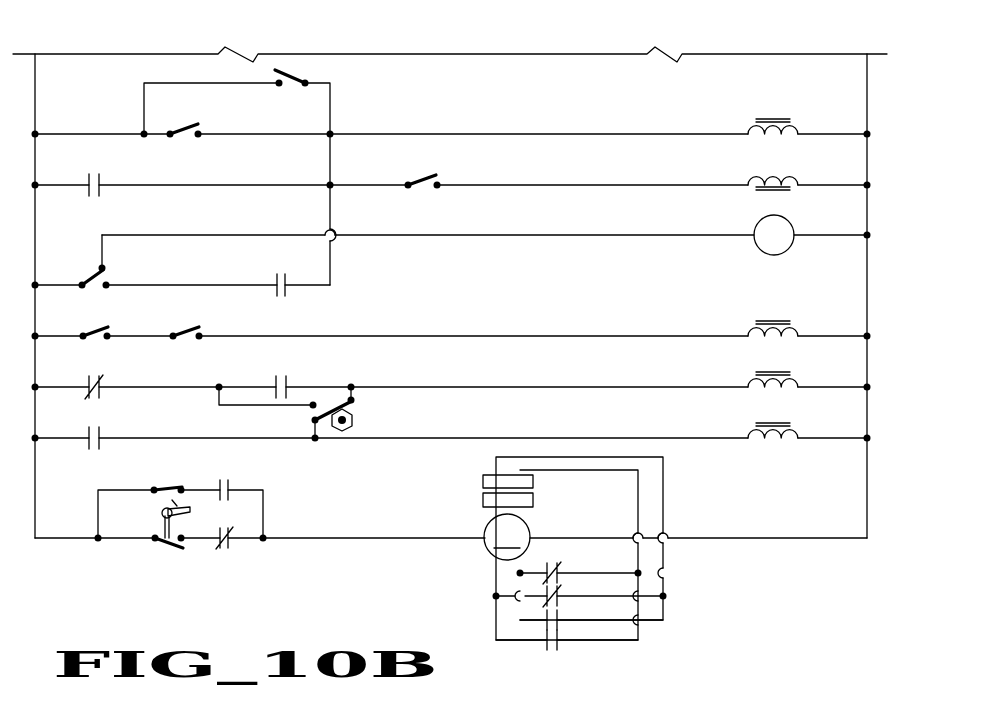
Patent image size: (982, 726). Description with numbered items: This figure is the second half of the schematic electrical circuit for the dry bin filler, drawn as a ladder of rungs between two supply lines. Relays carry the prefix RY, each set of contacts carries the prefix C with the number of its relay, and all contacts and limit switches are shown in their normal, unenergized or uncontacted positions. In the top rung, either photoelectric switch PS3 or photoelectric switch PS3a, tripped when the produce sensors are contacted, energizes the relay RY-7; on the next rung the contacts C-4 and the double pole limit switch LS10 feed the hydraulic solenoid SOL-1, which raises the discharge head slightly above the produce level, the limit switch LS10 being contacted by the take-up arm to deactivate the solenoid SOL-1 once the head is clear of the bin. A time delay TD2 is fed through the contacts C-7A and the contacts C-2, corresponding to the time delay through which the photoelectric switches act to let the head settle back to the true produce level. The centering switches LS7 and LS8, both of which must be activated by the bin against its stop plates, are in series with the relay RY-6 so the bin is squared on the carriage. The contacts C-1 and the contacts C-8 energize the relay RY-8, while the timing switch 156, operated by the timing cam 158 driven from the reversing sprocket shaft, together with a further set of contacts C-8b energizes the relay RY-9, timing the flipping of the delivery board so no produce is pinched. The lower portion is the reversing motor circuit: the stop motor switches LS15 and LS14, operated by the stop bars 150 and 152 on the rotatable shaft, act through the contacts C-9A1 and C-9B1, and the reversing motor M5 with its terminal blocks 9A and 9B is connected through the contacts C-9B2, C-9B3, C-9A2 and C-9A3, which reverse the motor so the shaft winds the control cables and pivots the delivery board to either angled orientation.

The photoelectric switch PS3a is at (290, 74).
The photoelectric switch PS3 is at (185, 128).
The relay RY-7 is at (750, 125).
The relay contacts C-4 is at (101, 180).
The limit switch LS10 is at (418, 178).
The hydraulic solenoid SOL-1 is at (803, 165).
The time delay TD2 is at (770, 230).
The relay contacts C-7A is at (104, 275).
The relay contacts C-2 is at (276, 280).
The centering switch LS7 is at (94, 330).
The centering switch LS8 is at (186, 330).
The relay RY-6 is at (750, 326).
The relay contacts C-1 is at (101, 382).
The relay contacts C-8 is at (288, 382).
The relay RY-8 is at (750, 377).
The timing switch 156 is at (318, 412).
The timing cam 158 is at (353, 418).
The relay contacts C-8b is at (101, 433).
The relay RY-9 is at (750, 428).
The stop motor switch LS15 is at (160, 486).
The relay contacts C-9A1 is at (232, 487).
The stop motor switch LS14 is at (175, 544).
The relay contacts C-9B1 is at (232, 546).
The stop bar 150 is at (162, 525).
The stop bar 152 is at (192, 510).
The reversing motor M5 is at (508, 543).
The motor terminal block 9A is at (533, 482).
The motor terminal block 9B is at (533, 500).
The relay contacts C-9B2 is at (565, 553).
The relay contacts C-9B3 is at (558, 592).
The relay contacts C-9A2 is at (558, 616).
The relay contacts C-9A3 is at (558, 645).